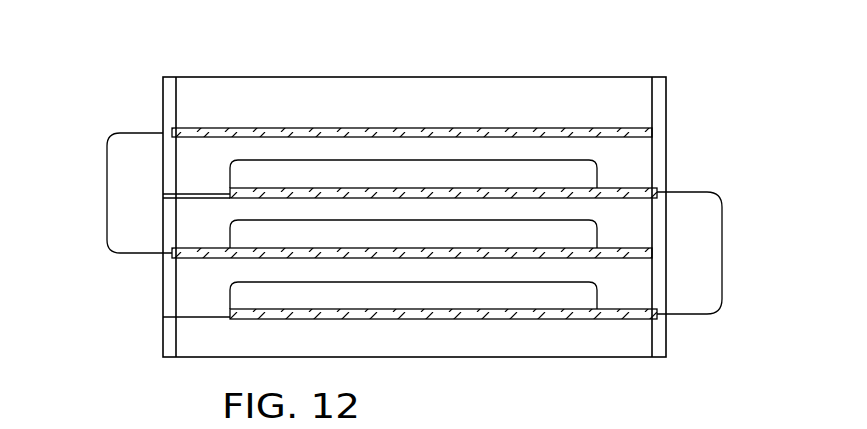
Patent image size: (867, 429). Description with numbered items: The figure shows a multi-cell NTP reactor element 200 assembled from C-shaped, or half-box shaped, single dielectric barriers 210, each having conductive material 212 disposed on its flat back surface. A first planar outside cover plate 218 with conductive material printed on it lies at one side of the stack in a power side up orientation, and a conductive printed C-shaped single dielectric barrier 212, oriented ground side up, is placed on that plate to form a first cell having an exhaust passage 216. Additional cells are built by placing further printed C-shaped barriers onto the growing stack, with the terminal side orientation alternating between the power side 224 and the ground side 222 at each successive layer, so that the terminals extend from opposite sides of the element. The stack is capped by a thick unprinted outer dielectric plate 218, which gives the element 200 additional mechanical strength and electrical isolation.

The multi-cell NTP reactor element 200 is at (133, 79).
The C-shaped single dielectric barrier 210 is at (197, 293).
The conductive material 212 is at (265, 250).
The exhaust passage 216 is at (363, 172).
The outer plate 218 is at (457, 97).
The ground side 222 is at (107, 191).
The power side 224 is at (722, 247).